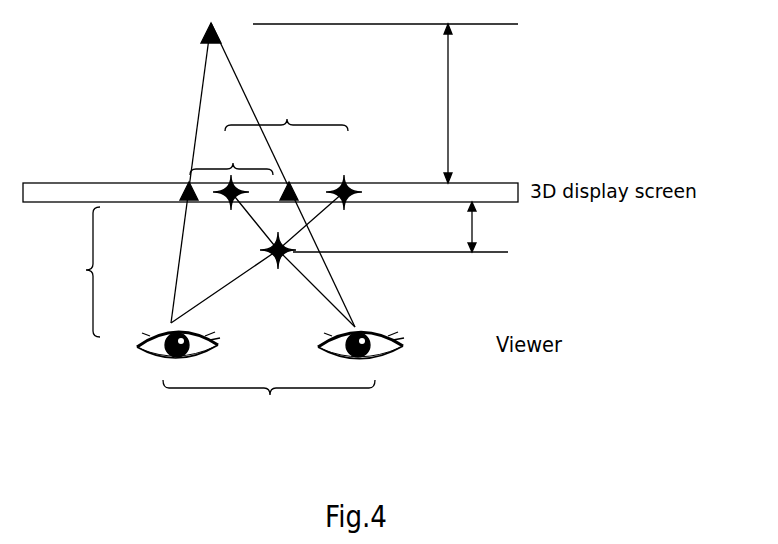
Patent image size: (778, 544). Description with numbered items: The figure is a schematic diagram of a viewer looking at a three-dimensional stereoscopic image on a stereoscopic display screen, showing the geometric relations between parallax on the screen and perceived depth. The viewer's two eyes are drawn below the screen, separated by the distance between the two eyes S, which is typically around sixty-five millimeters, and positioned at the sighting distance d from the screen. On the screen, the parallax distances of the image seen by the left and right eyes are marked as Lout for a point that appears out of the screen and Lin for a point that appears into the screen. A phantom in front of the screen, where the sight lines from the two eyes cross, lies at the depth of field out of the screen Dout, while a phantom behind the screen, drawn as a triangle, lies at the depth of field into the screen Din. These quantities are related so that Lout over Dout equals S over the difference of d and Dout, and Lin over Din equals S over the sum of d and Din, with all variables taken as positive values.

The parallax distance out of the screen Lout is at (286, 106).
The parallax distance into the screen Lin is at (231, 156).
The depth of field into the screen Din is at (470, 103).
The depth of field out of the screen Dout is at (500, 227).
The sighting distance d is at (84, 272).
The distance between the two eyes S is at (269, 404).